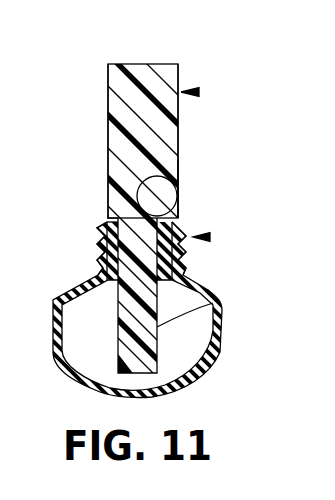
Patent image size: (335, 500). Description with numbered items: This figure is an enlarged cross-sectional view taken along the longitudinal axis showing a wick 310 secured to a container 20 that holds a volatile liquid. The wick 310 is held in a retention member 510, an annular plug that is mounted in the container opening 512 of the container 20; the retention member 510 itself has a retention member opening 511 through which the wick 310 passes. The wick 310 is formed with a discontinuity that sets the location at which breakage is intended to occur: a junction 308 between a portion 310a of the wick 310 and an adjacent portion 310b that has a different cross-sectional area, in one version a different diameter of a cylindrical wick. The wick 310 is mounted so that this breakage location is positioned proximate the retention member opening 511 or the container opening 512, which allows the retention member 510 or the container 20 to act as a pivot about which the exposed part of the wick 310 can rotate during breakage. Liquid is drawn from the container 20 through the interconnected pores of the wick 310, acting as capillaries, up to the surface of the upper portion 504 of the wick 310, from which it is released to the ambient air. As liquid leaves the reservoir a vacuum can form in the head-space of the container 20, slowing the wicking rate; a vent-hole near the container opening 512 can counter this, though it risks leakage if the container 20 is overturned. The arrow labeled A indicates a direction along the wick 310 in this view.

The wick 310 is at (166, 240).
The portion of wick 310a is at (108, 130).
The adjacent portion of wick 310b is at (222, 300).
The upper portion of wick 504 is at (157, 151).
The container opening 512 is at (176, 172).
The junction 308 is at (147, 202).
The retention member 510 is at (108, 222).
The retention member opening 511 is at (194, 237).
The direction A is at (182, 92).
The container 20 is at (167, 336).